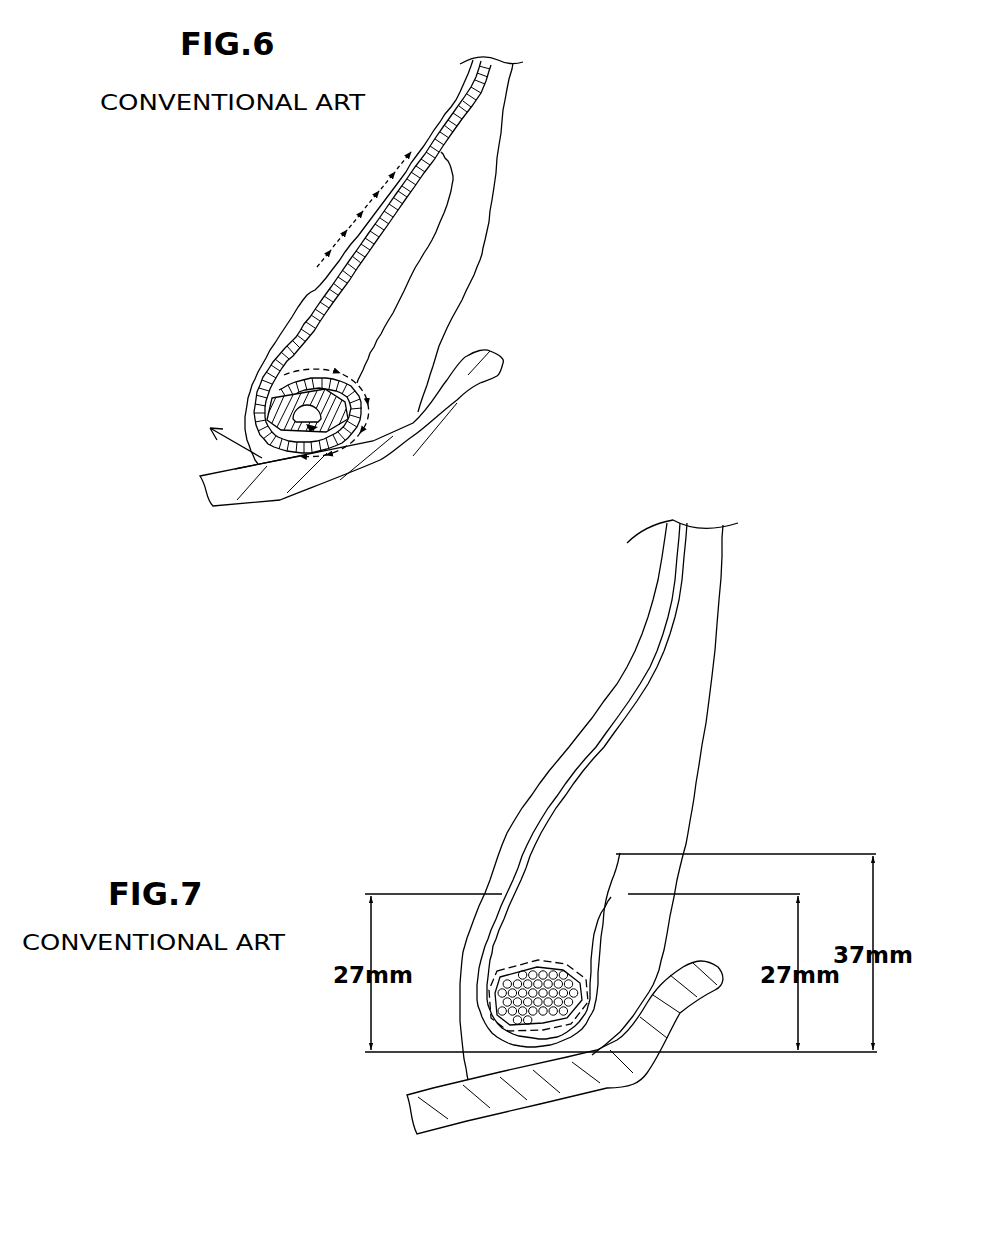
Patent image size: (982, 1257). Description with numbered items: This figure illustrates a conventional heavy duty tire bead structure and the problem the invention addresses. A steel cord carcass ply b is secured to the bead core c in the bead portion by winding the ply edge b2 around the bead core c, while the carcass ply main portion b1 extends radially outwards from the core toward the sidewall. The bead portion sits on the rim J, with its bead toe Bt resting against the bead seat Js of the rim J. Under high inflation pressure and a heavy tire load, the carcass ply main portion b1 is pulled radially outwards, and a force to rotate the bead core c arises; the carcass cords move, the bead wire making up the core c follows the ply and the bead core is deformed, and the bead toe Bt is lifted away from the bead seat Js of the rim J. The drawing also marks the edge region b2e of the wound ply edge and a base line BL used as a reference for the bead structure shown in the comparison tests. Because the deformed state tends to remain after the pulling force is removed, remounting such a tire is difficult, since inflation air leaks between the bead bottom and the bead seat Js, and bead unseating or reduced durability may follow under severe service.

In FIG. 6, the steel cord carcass ply b is at (240, 226).
In FIG. 6, the carcass ply main portion b1 is at (323, 290).
In FIG. 6, the ply edges b2 is at (318, 372).
In FIG. 6, the outer surface of bead apex / turn-up end region b2e is at (257, 400).
In FIG. 6, the bead toe Bt is at (250, 451).
In FIG. 6, the bead seat Js is at (247, 466).
In FIG. 6, the rim J is at (413, 413).
In FIG. 6, the bead core c is at (293, 420).
In FIG. 7, the bead base line BL is at (730, 1057).